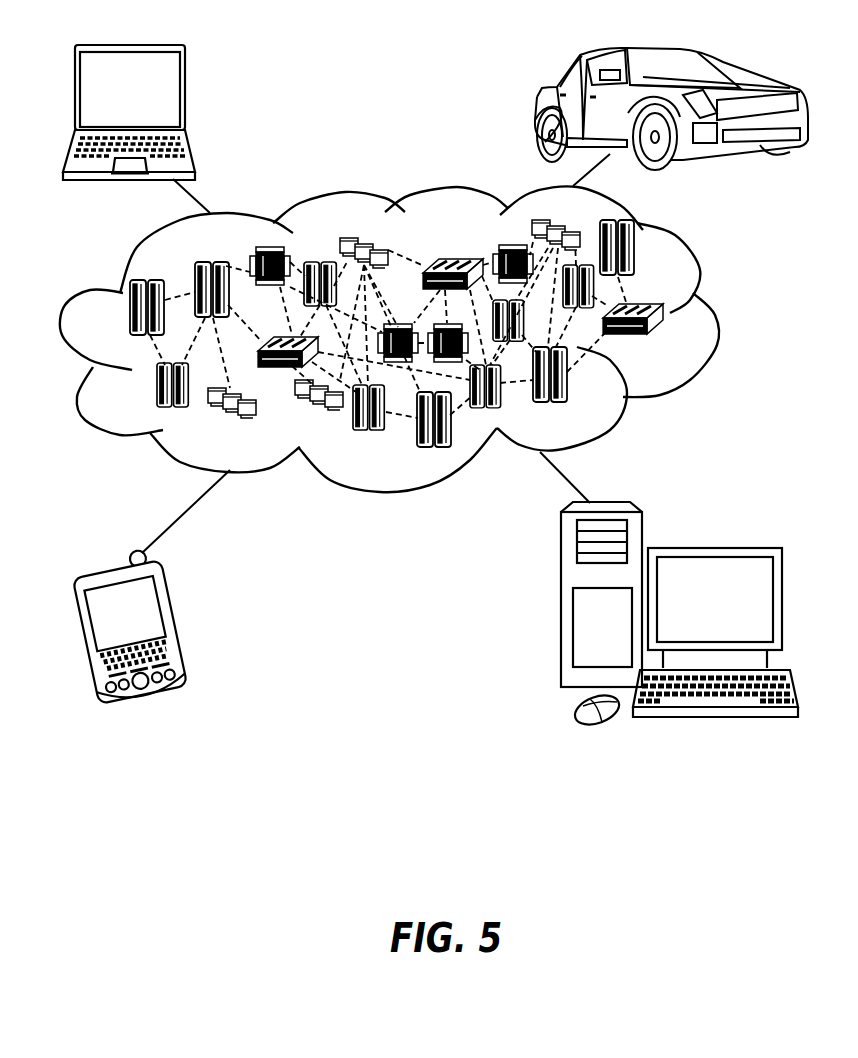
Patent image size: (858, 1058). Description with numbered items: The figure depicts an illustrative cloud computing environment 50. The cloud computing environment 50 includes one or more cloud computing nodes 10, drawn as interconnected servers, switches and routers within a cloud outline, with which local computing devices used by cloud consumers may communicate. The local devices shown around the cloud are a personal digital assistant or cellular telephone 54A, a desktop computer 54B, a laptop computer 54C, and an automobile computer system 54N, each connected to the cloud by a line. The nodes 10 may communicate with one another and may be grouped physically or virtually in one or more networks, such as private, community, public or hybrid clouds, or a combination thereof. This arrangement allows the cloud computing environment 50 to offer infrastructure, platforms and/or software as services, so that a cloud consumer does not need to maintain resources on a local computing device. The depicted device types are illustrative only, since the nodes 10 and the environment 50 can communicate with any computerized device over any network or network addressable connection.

The cloud computing node 10 is at (676, 348).
The cloud computing environment 50 is at (713, 317).
The personal digital assistant or cellular telephone 54A is at (177, 623).
The desktop computer 54B is at (713, 547).
The laptop computer 54C is at (187, 95).
The automobile computer system 54N is at (538, 108).